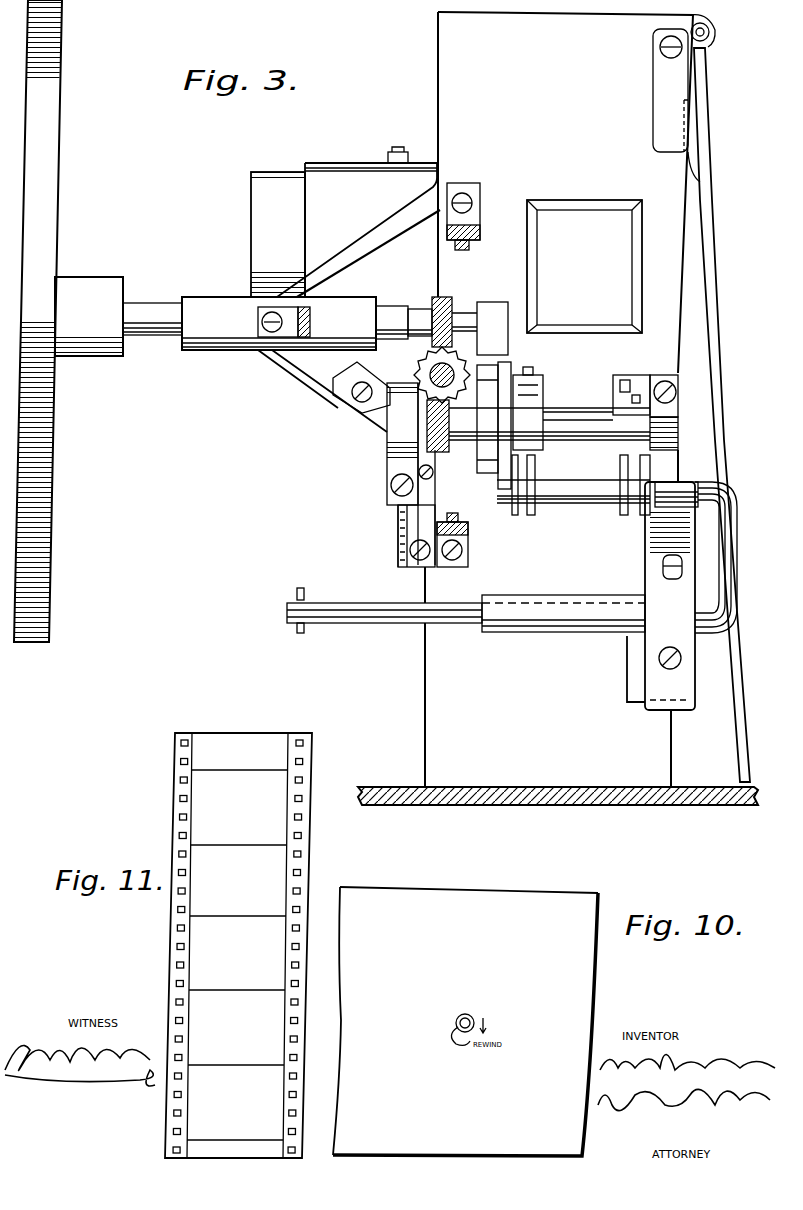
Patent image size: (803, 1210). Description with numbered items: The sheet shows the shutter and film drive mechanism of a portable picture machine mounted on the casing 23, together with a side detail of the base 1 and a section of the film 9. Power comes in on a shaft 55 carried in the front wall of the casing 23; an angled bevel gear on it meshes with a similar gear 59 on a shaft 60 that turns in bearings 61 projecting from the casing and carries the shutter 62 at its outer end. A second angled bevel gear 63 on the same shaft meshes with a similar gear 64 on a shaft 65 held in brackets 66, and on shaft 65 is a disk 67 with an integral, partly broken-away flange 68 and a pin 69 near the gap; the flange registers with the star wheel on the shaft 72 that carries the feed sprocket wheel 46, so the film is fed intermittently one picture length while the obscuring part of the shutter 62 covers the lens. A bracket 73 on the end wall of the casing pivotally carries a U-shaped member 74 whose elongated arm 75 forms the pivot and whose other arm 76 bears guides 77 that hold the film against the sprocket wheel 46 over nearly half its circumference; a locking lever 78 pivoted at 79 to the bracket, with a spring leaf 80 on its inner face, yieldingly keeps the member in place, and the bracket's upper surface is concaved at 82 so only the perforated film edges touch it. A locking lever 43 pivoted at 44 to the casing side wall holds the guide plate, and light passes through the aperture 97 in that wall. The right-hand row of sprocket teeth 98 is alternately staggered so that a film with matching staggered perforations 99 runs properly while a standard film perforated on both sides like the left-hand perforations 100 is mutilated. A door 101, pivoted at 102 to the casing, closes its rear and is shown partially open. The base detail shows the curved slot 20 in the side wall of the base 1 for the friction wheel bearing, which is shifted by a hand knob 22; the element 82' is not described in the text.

In FIG. 10, the base 1 is at (400, 902).
In FIG. 11, the film 9 is at (230, 738).
In FIG. 10, the curved slot 20 is at (455, 1033).
In FIG. 10, the hand knob 22 is at (470, 1015).
In FIG. 3, the casing 23 is at (559, 399).
In FIG. 3, the locking lever 43 is at (653, 78).
In FIG. 3, the pivot 44 is at (682, 50).
In FIG. 3, the feed sprocket wheel 46 is at (538, 382).
In FIG. 3, the shaft 55 is at (430, 368).
In FIG. 3, the angled bevel gear 59 is at (440, 298).
In FIG. 3, the shaft 60 is at (155, 328).
In FIG. 3, the bearings 61 is at (238, 335).
In FIG. 3, the shutter 62 is at (52, 492).
In FIG. 3, the angled bevel gear 63 is at (417, 390).
In FIG. 3, the angled bevel gear 64 is at (443, 452).
In FIG. 3, the shaft 65 is at (575, 432).
In FIG. 3, the brackets 66 is at (395, 432).
In FIG. 3, the disk 67 is at (505, 490).
In FIG. 3, the flange 68 is at (487, 470).
In FIG. 3, the pin 69 is at (490, 345).
In FIG. 3, the shaft 72 is at (578, 410).
In FIG. 3, the bracket 73 is at (628, 657).
In FIG. 3, the U-shaped member 74 is at (722, 556).
In FIG. 3, the arm 75 is at (398, 615).
In FIG. 3, the arm 76 is at (645, 525).
In FIG. 3, the guides 77 is at (520, 512).
In FIG. 3, the locking lever 78 is at (660, 578).
In FIG. 3, the pivot 79 is at (680, 663).
In FIG. 3, the spring leaf 80 is at (683, 485).
In FIG. 3, the concaved upper surface 82 is at (563, 600).
In FIG. 3, the arm 82' is at (345, 289).
In FIG. 3, the aperture 97 is at (583, 225).
In FIG. 3, the staggered sprocket teeth 98 is at (636, 378).
In FIG. 11, the staggered perforations 99 is at (302, 780).
In FIG. 11, the standard perforations 100 is at (178, 780).
In FIG. 3, the door 101 is at (718, 336).
In FIG. 3, the pivot 102 is at (710, 32).